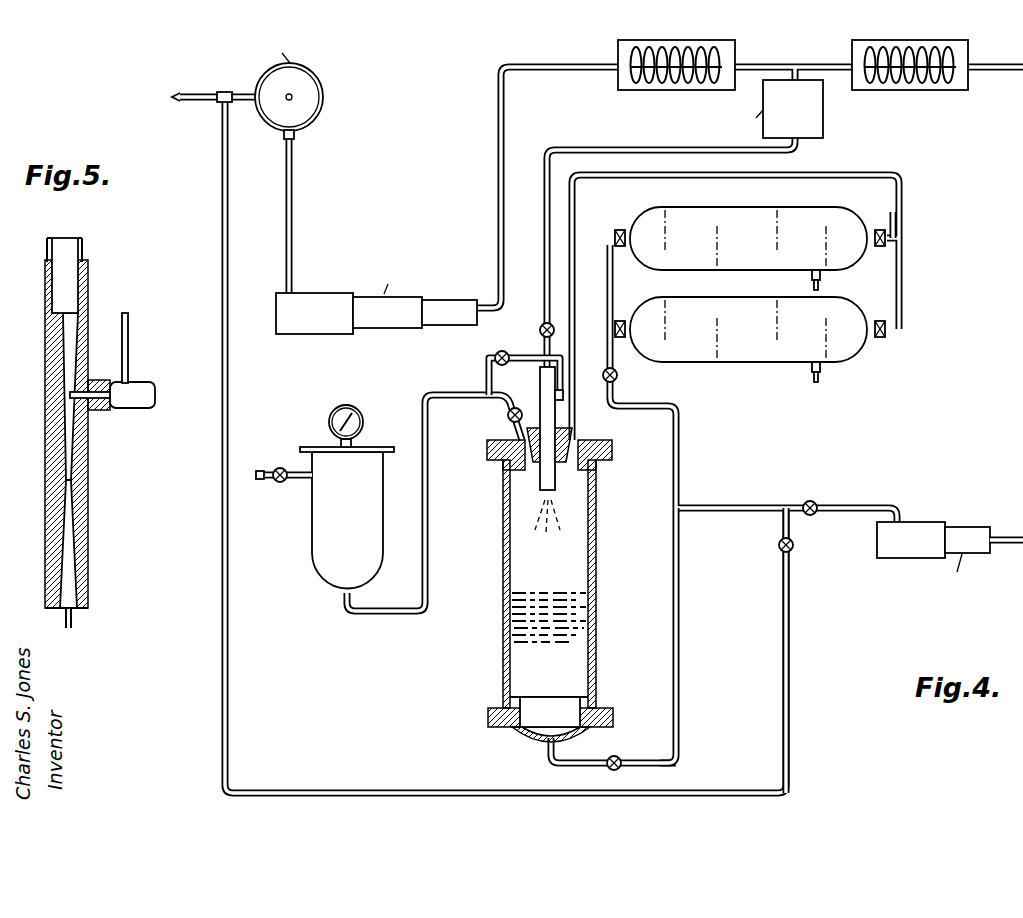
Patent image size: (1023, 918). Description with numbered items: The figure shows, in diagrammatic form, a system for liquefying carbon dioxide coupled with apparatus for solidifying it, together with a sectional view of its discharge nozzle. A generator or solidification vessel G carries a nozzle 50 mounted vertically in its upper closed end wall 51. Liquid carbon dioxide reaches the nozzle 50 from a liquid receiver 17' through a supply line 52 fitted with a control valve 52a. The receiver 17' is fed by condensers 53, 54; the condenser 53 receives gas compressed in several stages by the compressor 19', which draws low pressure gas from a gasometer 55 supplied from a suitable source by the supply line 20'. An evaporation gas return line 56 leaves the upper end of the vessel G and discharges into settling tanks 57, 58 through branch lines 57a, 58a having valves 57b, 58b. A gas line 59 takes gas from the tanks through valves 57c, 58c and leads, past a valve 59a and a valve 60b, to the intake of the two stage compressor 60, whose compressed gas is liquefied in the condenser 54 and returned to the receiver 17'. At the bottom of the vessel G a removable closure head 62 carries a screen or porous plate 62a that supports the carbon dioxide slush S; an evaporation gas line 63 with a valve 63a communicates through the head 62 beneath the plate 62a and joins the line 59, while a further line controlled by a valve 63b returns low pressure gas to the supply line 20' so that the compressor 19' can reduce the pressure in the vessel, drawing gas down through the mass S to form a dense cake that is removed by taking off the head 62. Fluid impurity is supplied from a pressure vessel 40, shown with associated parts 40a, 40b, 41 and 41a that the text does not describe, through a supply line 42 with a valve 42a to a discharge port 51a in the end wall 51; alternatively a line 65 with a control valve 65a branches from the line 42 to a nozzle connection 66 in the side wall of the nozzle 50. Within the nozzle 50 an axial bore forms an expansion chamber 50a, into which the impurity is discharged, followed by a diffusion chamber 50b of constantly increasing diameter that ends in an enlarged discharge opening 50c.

In FIG. 4, the supply line 20' is at (214, 84).
In FIG. 4, the gasometer 55 is at (306, 99).
In FIG. 4, the valve 63a is at (222, 148).
In FIG. 5, the liquid carbon dioxide supply line 52 is at (68, 262).
In FIG. 4, the liquid carbon dioxide supply line 52 is at (574, 153).
In FIG. 4, the control valve 52a is at (543, 326).
In FIG. 4, the condenser 53 is at (736, 66).
In FIG. 4, the condenser 54 is at (969, 62).
In FIG. 4, the liquid receiver 17' is at (756, 109).
In FIG. 4, the evaporation gas return line 56 is at (573, 332).
In FIG. 4, the settling tank 57 is at (776, 233).
In FIG. 4, the branch line 57a is at (893, 212).
In FIG. 4, the valve 57b is at (888, 244).
In FIG. 4, the valve 57c is at (620, 230).
In FIG. 4, the settling tank 58 is at (780, 341).
In FIG. 4, the branch line 58a is at (888, 338).
In FIG. 4, the valve 58b is at (882, 340).
In FIG. 4, the valve 58c is at (622, 340).
In FIG. 4, the gas line 59 is at (613, 302).
In FIG. 4, the valve 59a is at (616, 380).
In FIG. 5, the nozzle 50 is at (69, 450).
In FIG. 4, the nozzle 50 is at (540, 392).
In FIG. 5, the expansion chamber 50a is at (66, 374).
In FIG. 5, the diffusion chamber 50b is at (70, 582).
In FIG. 5, the discharge opening 50c is at (70, 620).
In FIG. 4, the upper closed end wall 51 is at (610, 446).
In FIG. 4, the discharge port 51a is at (492, 459).
In FIG. 5, the fluid impurity supply line 65 is at (128, 372).
In FIG. 4, the fluid impurity supply line 65 is at (488, 370).
In FIG. 4, the control valve 65a is at (502, 351).
In FIG. 5, the nozzle connection 66 is at (127, 400).
In FIG. 4, the nozzle connection 66 is at (565, 396).
In FIG. 4, the fluid impurity supply line 42 is at (427, 569).
In FIG. 4, the valve 42a is at (508, 418).
In FIG. 4, the pressure vessel 40 is at (329, 481).
In FIG. 4, the cover 40a is at (371, 447).
In FIG. 4, the pressure gauge 40b is at (347, 418).
In FIG. 4, the valve 41 is at (282, 466).
In FIG. 4, the inlet 41a is at (279, 482).
In FIG. 4, the compressor 19' is at (376, 312).
In FIG. 4, the generator or solidification vessel G is at (552, 558).
In FIG. 4, the carbon dioxide slush S is at (577, 641).
In FIG. 4, the removable closure head 62 is at (581, 736).
In FIG. 4, the screen or porous plate 62a is at (582, 697).
In FIG. 4, the evaporation gas line 63 is at (680, 722).
In FIG. 4, the valve 63b is at (793, 546).
In FIG. 4, the two stage compressor 60 is at (915, 536).
In FIG. 4, the valve 60b is at (810, 501).